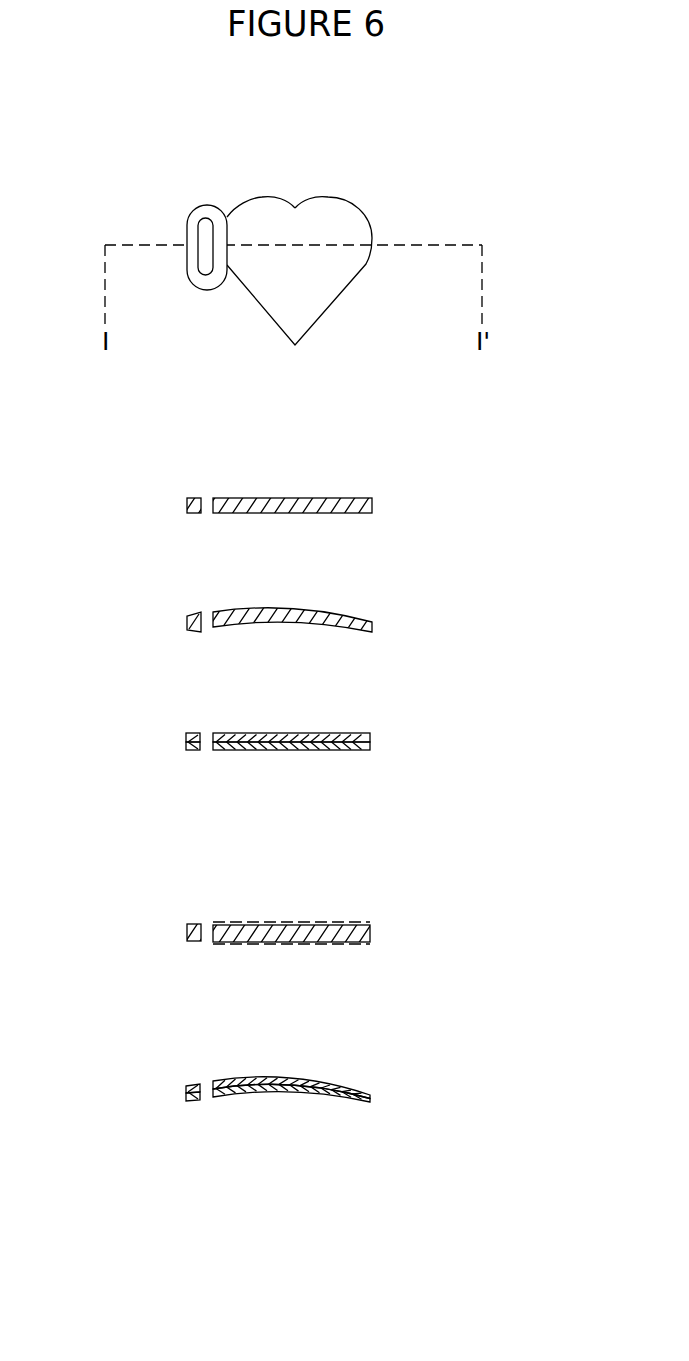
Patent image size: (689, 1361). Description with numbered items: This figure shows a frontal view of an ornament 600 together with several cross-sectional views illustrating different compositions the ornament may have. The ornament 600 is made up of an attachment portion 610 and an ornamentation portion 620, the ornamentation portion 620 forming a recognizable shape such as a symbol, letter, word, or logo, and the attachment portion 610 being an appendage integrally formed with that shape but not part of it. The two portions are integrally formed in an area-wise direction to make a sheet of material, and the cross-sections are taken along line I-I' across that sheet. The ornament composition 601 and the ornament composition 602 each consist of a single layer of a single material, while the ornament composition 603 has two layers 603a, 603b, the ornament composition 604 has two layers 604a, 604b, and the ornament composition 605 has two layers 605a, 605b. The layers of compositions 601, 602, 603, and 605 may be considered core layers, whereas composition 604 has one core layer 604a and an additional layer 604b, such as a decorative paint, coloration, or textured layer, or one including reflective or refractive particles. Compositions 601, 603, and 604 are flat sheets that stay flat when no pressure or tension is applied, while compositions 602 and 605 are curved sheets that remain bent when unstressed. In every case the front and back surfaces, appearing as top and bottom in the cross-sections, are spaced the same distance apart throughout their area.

The ornament 600 is at (250, 182).
The attachment portion 610 is at (205, 205).
The ornamentation portion 620 is at (275, 323).
The ornament composition 601 is at (245, 498).
The ornament composition 602 is at (245, 608).
The ornament composition 603 is at (175, 742).
The layer 603a is at (245, 734).
The layer 603b is at (245, 750).
The ornament composition 604 is at (175, 932).
The core layer 604a is at (245, 944).
The additional layer 604b is at (245, 923).
The ornament composition 605 is at (175, 1095).
The layer 605a is at (245, 1081).
The layer 605b is at (245, 1097).